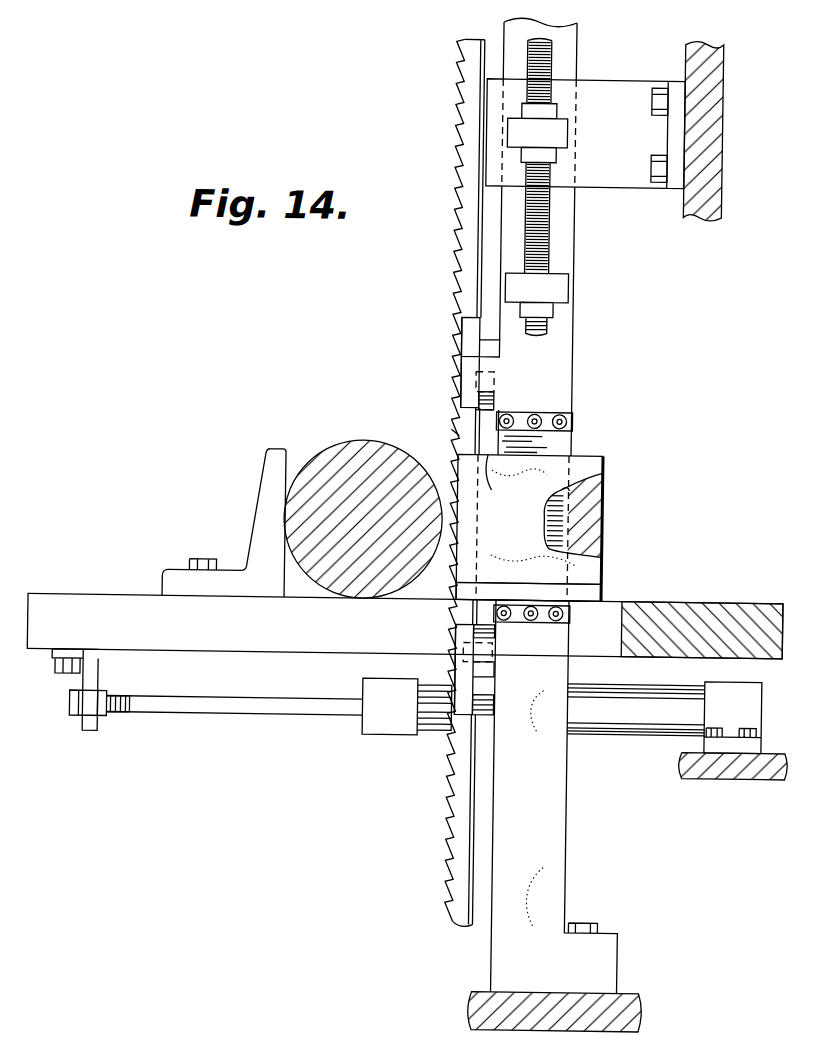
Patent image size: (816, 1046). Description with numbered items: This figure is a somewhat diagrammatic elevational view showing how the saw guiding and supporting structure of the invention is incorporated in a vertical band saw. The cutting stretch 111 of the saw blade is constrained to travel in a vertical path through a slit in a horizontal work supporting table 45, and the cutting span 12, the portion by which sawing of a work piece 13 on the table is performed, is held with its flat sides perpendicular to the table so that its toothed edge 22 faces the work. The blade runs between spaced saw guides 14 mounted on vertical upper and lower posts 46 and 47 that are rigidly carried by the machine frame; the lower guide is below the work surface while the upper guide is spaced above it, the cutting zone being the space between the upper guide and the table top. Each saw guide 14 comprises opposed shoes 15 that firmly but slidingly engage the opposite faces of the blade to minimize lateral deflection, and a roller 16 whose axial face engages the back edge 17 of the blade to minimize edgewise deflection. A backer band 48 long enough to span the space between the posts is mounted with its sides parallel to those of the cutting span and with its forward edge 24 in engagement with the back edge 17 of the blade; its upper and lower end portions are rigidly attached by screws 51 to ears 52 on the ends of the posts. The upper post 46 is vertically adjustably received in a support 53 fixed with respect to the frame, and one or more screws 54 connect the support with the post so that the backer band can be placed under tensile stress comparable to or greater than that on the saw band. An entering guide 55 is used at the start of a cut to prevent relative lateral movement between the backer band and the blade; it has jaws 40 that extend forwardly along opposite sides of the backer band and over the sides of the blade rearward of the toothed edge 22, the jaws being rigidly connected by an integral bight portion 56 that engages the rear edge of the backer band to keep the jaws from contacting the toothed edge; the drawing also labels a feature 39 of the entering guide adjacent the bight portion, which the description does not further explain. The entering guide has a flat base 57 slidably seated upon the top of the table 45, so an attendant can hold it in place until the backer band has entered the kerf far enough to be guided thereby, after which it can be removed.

The cutting stretch of the saw blade 111 is at (452, 252).
The cutting span 12 is at (455, 433).
The work piece 13 is at (348, 441).
The saw guides 14 is at (508, 353).
The shoes 15 is at (458, 390).
The roller 16 is at (495, 394).
The back edge of the blade 17 is at (502, 481).
The toothed edge 22 is at (442, 760).
The forward edge of the backer band 24 is at (473, 420).
The opening 39 is at (563, 498).
The jaws 40 is at (497, 542).
The work supporting table 45 is at (678, 600).
The upper post 46 is at (562, 377).
The lower post 47 is at (556, 790).
The backer band 48 is at (562, 447).
The screws 51 is at (534, 413).
The ears 52 is at (548, 431).
The support 53 is at (592, 92).
The screws 54 is at (542, 252).
The entering guide 55 is at (614, 512).
The bight portion 56 is at (590, 529).
The flat base 57 is at (582, 593).